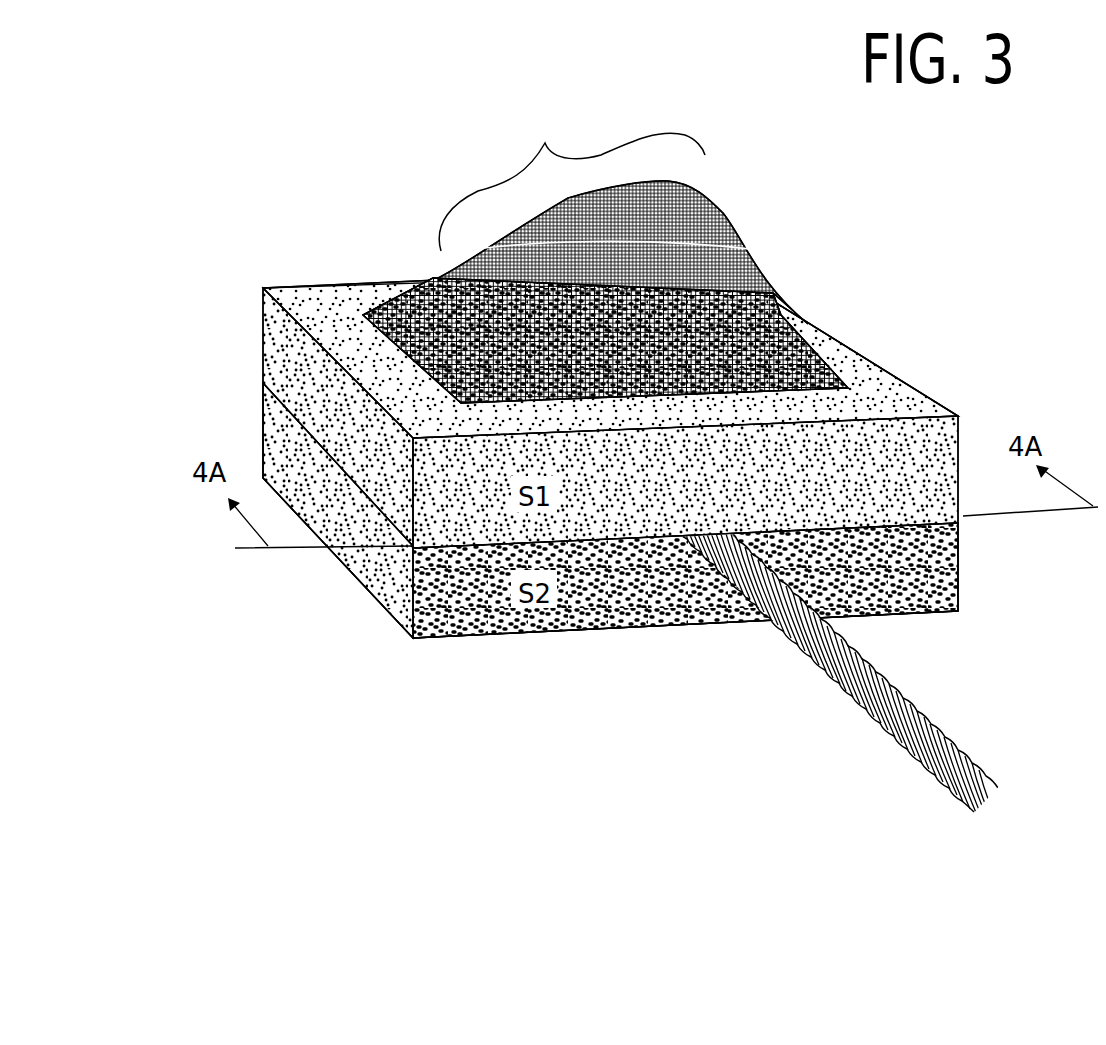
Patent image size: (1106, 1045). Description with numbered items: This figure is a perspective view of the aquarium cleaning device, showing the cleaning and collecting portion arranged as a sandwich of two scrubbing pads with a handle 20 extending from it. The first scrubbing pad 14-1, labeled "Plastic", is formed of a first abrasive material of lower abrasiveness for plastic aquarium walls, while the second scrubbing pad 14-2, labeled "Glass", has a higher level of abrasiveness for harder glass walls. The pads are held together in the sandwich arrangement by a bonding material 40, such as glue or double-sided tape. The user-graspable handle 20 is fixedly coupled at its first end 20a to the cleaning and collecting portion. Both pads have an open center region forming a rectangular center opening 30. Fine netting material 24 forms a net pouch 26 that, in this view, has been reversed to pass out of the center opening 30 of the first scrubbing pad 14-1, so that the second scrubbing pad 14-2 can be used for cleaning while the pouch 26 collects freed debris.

The first scrubbing pad 14-1 is at (313, 287).
The second scrubbing pad 14-2 is at (368, 585).
The handle 20 is at (847, 654).
The first end 20a is at (775, 614).
The netting material 24 is at (707, 200).
The net pouch 26 is at (521, 162).
The center opening 30 is at (582, 660).
The bonding material 40 is at (245, 373).